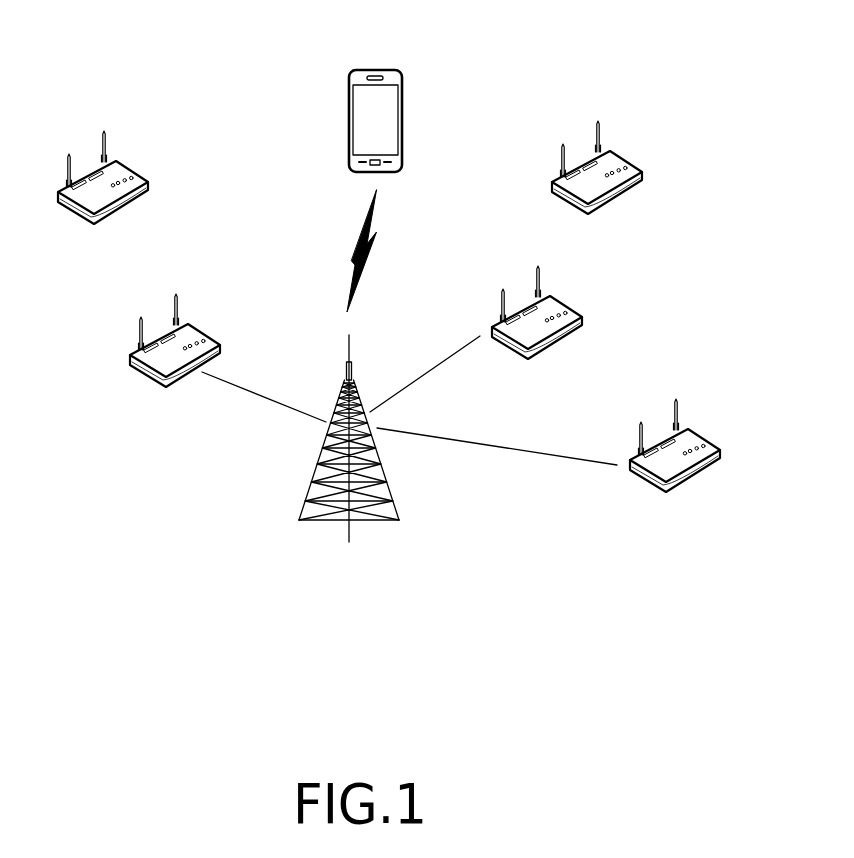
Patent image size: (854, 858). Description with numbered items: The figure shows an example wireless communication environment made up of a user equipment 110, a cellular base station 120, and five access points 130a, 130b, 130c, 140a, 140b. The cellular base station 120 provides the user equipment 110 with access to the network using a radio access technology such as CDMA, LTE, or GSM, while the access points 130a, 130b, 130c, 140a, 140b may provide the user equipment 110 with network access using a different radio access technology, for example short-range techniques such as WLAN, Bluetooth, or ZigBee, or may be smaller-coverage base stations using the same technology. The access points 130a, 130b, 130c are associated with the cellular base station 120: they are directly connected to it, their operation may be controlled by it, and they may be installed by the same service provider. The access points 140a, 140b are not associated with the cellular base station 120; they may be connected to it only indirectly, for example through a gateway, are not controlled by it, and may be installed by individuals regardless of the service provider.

The user equipment 110 is at (373, 68).
The cellular base station 120 is at (387, 483).
The access point 130a is at (200, 340).
The access point 130b is at (561, 312).
The access point 130c is at (700, 445).
The access point 140a is at (128, 177).
The access point 140b is at (621, 167).